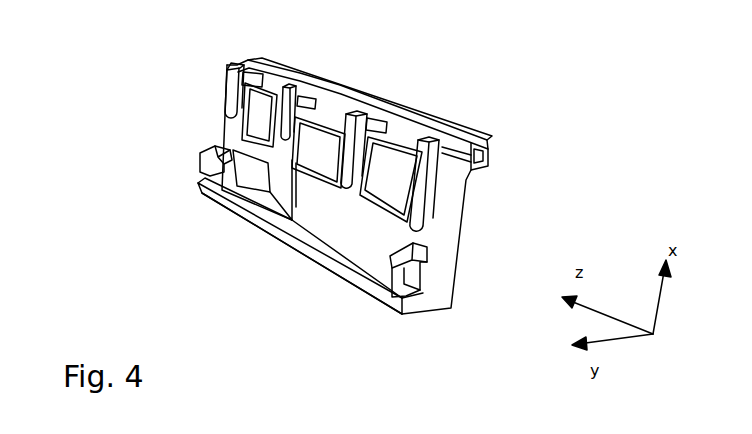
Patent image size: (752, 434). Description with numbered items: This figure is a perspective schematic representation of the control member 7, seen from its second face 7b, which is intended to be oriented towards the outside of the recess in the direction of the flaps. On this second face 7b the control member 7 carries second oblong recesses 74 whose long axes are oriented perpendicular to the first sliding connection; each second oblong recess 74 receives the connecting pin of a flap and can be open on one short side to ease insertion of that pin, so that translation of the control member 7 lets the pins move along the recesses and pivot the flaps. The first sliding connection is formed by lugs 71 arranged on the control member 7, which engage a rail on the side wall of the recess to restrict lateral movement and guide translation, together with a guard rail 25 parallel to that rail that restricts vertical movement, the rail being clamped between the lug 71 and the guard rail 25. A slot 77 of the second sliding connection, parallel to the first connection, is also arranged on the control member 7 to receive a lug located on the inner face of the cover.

The control member 7 is at (208, 248).
The second face 7b is at (314, 240).
The guard rail 25 is at (353, 288).
The lug 71 is at (198, 155).
The second oblong recess 74 is at (291, 106).
The slot 77 is at (477, 145).